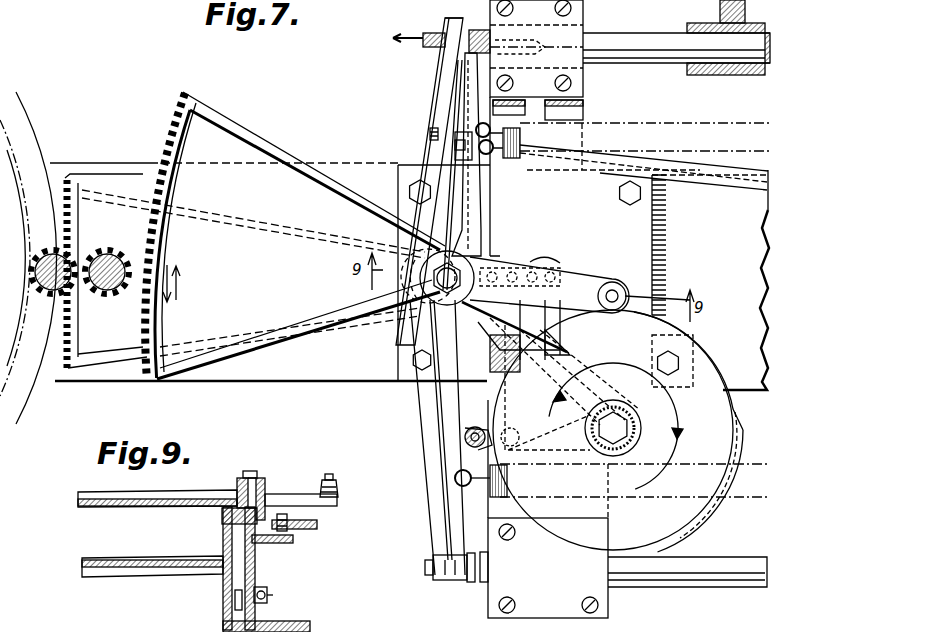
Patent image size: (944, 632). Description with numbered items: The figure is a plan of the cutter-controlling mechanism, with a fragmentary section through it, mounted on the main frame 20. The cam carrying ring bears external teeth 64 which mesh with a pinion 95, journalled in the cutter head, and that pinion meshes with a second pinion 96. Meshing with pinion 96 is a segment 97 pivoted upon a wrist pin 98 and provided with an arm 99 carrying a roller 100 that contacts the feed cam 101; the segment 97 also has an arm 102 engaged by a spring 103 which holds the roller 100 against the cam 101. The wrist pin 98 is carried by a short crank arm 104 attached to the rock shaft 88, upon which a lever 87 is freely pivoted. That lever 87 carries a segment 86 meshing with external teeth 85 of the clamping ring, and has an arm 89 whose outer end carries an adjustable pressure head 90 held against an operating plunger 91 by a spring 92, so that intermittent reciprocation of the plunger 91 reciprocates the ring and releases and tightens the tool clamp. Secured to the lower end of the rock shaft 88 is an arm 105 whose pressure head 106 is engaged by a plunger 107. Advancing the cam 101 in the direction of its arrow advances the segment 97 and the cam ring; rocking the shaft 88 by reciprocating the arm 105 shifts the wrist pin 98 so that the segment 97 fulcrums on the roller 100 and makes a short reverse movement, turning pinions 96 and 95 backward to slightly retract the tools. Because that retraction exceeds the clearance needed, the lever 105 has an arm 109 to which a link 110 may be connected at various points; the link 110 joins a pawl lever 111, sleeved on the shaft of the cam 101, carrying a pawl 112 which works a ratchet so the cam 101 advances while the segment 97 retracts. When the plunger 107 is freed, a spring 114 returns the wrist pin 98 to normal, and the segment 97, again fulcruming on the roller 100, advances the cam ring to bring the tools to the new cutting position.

In FIG. 7, the frame 20 is at (272, 290).
In FIG. 7, the external teeth 64 is at (15, 178).
In FIG. 7, the external teeth 85 is at (37, 403).
In FIG. 7, the segment 86 is at (72, 173).
In FIG. 9, the lever 87 is at (145, 560).
In FIG. 7, the rock shaft 88 is at (420, 282).
In FIG. 9, the rock shaft 88 is at (240, 567).
In FIG. 7, the arm 89 is at (420, 420).
In FIG. 7, the adjustable pressure head 90 is at (465, 588).
In FIG. 7, the operating plunger 91 is at (485, 592).
In FIG. 7, the spring 92 is at (490, 495).
In FIG. 7, the pinion 95 is at (67, 253).
In FIG. 7, the pinion 96 is at (107, 298).
In FIG. 7, the segment 97 is at (258, 357).
In FIG. 9, the segment 97 is at (125, 507).
In FIG. 7, the wrist pin 98 is at (405, 330).
In FIG. 9, the wrist pin 98 is at (250, 480).
In FIG. 7, the arm 99 is at (590, 280).
In FIG. 9, the arm 99 is at (338, 501).
In FIG. 7, the roller 100 is at (612, 280).
In FIG. 9, the roller 100 is at (338, 483).
In FIG. 7, the feed cam 101 is at (683, 508).
In FIG. 7, the arm 102 is at (478, 221).
In FIG. 7, the spring 103 is at (520, 160).
In FIG. 7, the short crank arm 104 is at (405, 258).
In FIG. 9, the short crank arm 104 is at (225, 515).
In FIG. 7, the arm 105 is at (440, 85).
In FIG. 9, the arm 105 is at (225, 605).
In FIG. 7, the pressure head 106 is at (474, 30).
In FIG. 9, the pressure head 106 is at (270, 595).
In FIG. 7, the plunger 107 is at (468, 63).
In FIG. 7, the arm 109 is at (538, 262).
In FIG. 9, the arm 109 is at (317, 527).
In FIG. 7, the link 110 is at (545, 335).
In FIG. 9, the link 110 is at (284, 516).
In FIG. 7, the pawl lever 111 is at (465, 468).
In FIG. 7, the pawl 112 is at (468, 428).
In FIG. 7, the spring 114 is at (510, 130).